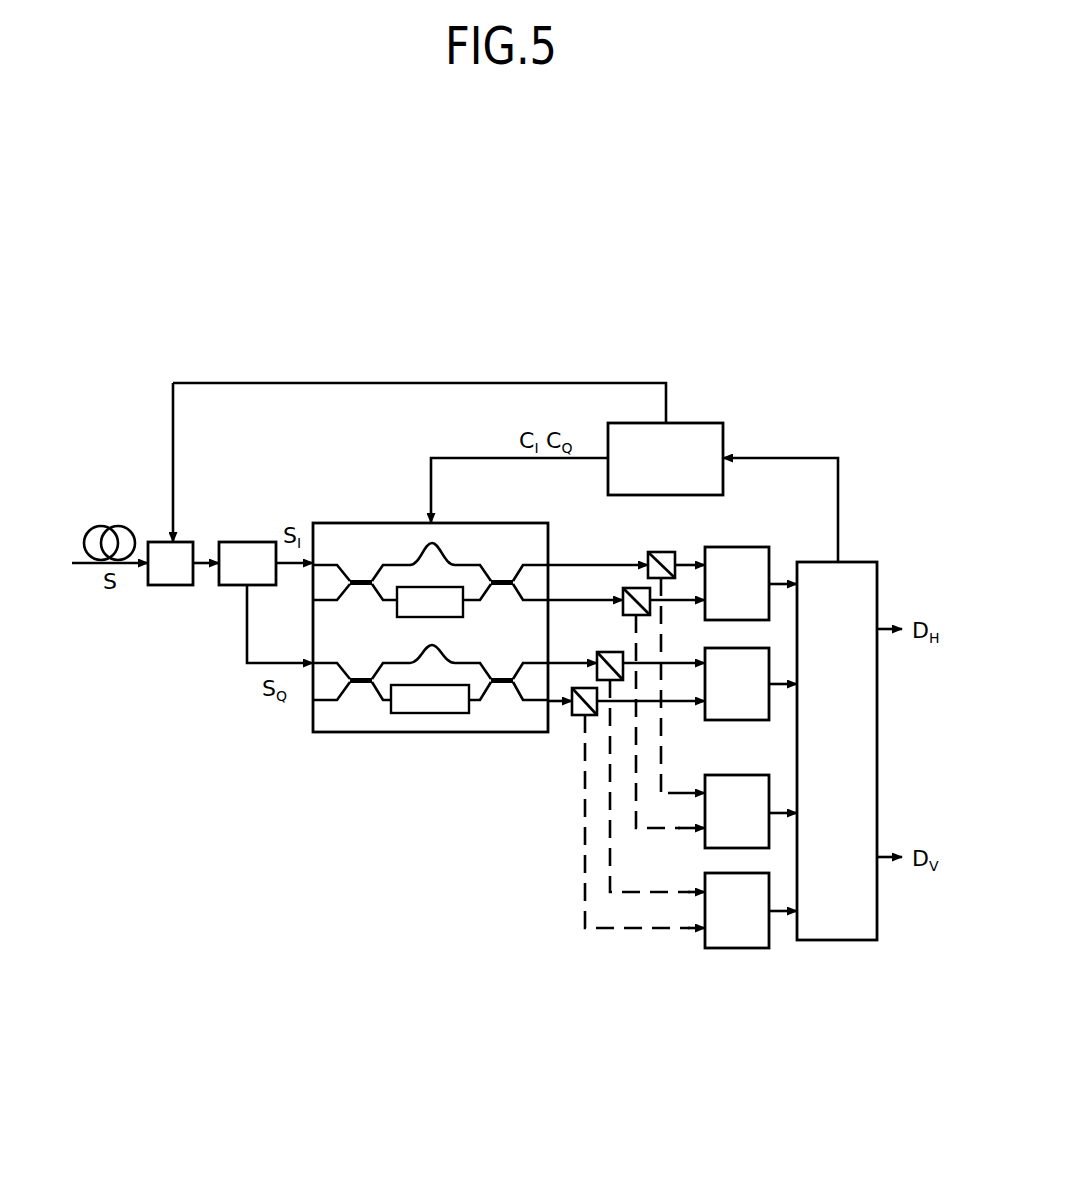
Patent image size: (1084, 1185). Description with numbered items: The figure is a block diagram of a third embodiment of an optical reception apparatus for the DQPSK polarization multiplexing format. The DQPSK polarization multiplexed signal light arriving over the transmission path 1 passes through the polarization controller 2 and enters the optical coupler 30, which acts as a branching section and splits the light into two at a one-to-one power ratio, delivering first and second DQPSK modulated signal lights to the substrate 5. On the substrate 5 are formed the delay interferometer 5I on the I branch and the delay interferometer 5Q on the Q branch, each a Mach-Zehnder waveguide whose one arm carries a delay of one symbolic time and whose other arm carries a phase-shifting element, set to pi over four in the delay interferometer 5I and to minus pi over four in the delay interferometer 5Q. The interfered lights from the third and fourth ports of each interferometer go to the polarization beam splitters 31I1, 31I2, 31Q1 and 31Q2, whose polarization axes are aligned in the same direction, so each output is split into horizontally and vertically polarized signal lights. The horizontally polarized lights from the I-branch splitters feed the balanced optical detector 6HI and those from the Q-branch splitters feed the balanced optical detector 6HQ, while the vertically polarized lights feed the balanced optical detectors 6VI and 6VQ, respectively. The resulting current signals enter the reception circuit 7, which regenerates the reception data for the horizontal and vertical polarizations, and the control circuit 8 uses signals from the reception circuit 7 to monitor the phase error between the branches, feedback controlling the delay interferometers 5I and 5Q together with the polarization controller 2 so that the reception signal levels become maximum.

The transmission path 1 is at (108, 527).
The polarization controller 2 is at (162, 542).
The optical coupler 30 is at (238, 542).
The substrate 5 is at (430, 620).
The delay interferometer 5I is at (392, 546).
The delay interferometer 5Q is at (383, 717).
The polarization beam splitter 31I1 is at (652, 552).
The polarization beam splitter 31I2 is at (637, 588).
The polarization beam splitter 31Q1 is at (606, 652).
The polarization beam splitter 31Q2 is at (576, 716).
The balanced optical detector 6HI is at (745, 547).
The balanced optical detector 6HQ is at (728, 720).
The balanced optical detector 6VI is at (746, 775).
The balanced optical detector 6VQ is at (730, 948).
The reception circuit 7 is at (857, 562).
The control circuit 8 is at (690, 423).